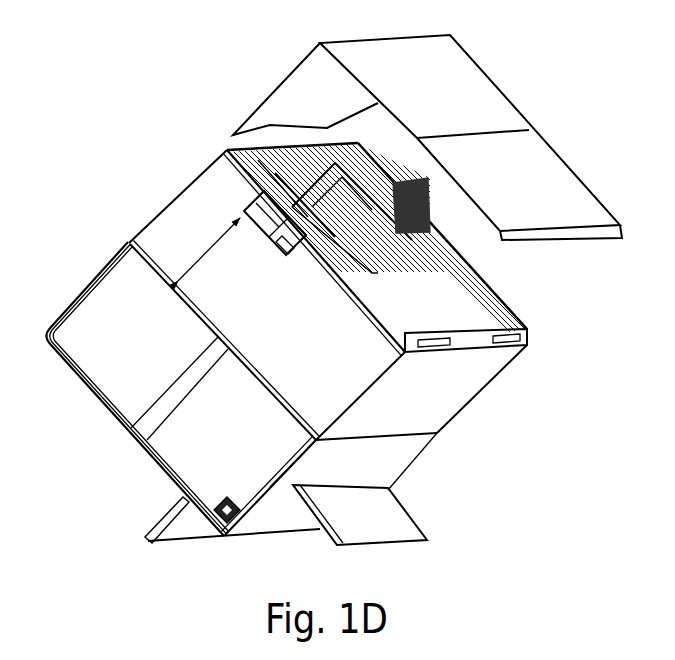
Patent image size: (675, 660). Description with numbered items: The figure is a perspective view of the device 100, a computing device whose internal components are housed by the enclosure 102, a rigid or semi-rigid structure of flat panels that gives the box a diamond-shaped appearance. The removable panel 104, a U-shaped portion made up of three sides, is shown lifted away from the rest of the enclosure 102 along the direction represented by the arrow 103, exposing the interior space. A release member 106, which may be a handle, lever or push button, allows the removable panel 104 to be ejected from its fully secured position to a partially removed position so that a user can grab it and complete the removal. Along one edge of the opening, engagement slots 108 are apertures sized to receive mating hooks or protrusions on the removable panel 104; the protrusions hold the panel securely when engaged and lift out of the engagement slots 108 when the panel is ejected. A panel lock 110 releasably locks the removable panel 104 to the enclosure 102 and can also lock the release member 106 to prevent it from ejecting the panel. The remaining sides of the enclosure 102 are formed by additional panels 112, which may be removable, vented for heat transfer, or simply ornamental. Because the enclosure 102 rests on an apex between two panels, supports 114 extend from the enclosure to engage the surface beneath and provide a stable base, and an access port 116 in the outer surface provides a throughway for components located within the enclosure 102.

The device 100 is at (128, 167).
The enclosure 102 is at (445, 467).
The arrow 103 is at (430, 198).
The removable panel 104 is at (460, 95).
The release member 106 is at (272, 218).
The engagement slots 108 is at (524, 347).
The panel lock 110 is at (298, 252).
The additional panels 112 is at (88, 337).
The supports 114 is at (160, 525).
The access port 116 is at (220, 500).